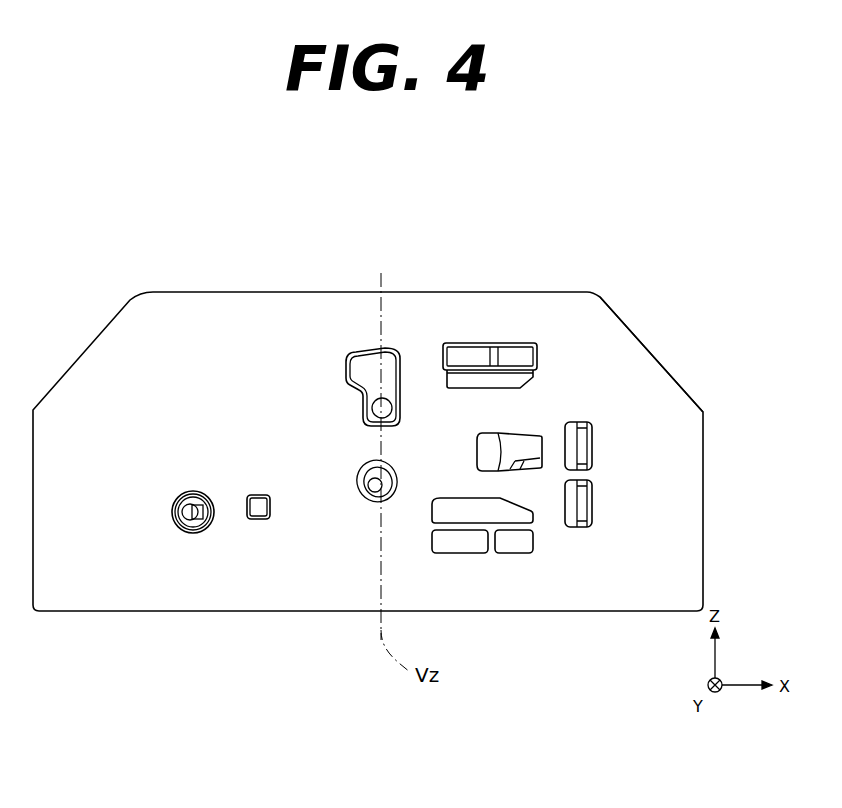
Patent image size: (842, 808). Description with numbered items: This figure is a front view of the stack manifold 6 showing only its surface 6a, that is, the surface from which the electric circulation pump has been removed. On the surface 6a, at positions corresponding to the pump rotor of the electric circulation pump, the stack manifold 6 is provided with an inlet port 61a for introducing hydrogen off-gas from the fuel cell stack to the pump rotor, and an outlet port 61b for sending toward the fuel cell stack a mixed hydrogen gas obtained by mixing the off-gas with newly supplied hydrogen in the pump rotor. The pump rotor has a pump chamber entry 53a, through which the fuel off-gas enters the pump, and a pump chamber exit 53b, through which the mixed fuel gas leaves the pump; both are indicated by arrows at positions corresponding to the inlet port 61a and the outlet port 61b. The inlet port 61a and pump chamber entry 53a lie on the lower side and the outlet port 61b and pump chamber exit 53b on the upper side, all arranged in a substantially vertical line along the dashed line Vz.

The stack manifold 6 is at (600, 292).
The surface of the stack manifold 6a is at (633, 345).
The pump chamber entry 53a is at (366, 478).
The pump chamber exit 53b is at (368, 393).
The inlet port 61a is at (367, 500).
The outlet port 61b is at (385, 410).